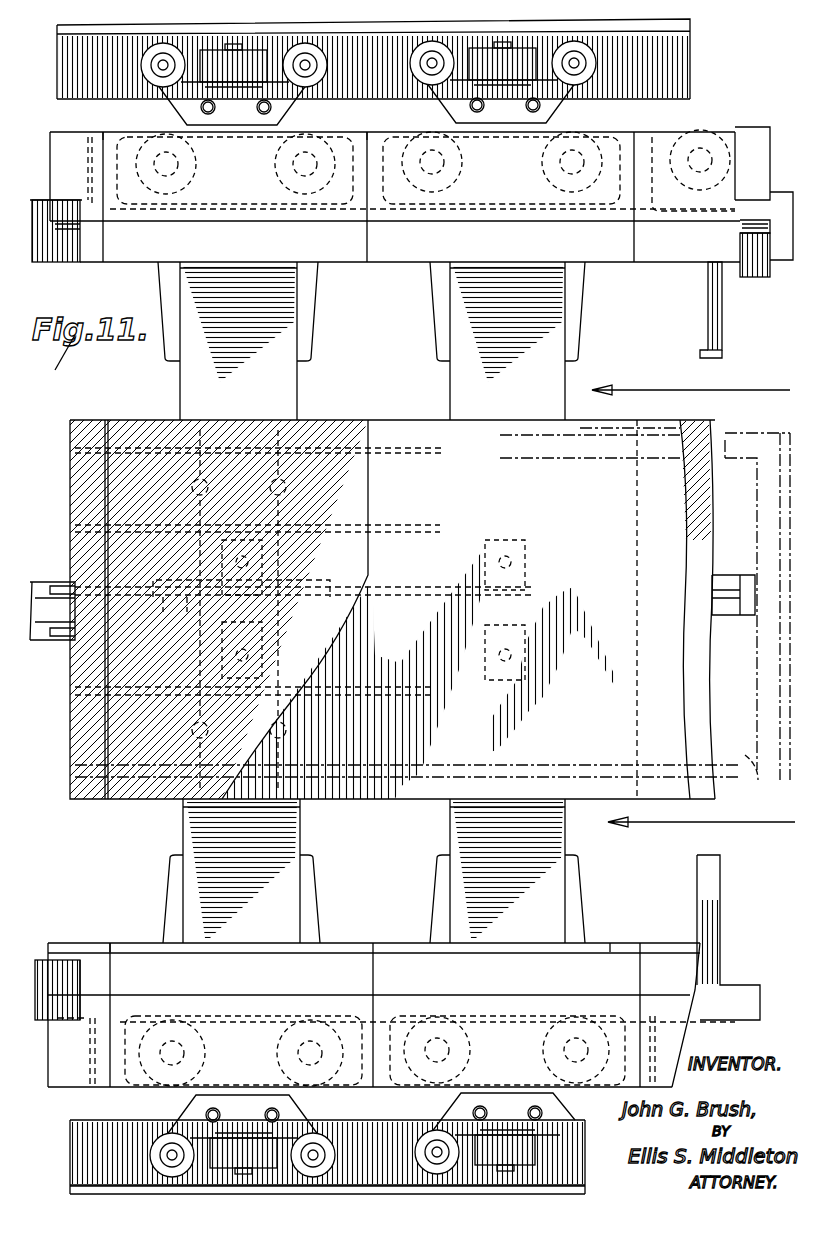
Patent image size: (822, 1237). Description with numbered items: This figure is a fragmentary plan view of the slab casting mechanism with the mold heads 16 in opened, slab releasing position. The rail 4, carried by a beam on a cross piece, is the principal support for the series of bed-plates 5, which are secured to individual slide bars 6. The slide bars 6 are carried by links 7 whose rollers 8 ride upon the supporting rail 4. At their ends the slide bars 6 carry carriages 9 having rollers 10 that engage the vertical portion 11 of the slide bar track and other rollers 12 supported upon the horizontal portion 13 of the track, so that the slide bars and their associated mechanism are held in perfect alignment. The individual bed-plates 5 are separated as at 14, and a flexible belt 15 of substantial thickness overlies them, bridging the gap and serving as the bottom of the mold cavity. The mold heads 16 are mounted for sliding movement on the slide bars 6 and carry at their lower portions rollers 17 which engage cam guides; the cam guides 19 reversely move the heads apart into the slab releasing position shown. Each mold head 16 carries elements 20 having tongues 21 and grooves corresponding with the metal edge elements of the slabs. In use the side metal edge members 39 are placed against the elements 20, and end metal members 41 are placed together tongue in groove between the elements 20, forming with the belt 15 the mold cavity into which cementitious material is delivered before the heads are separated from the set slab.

The rail 4 is at (50, 640).
The bed-plate 5 is at (714, 725).
The slide bar 6 is at (371, 602).
The link 7 is at (280, 596).
The roller 8 is at (275, 638).
The carriage 9 is at (175, 100).
The roller 10 is at (328, 60).
The vertical portion of the slide bar track 11 is at (690, 22).
The roller 12 is at (300, 105).
The horizontal portion of the slide bar track 13 is at (690, 70).
The separation 14 is at (106, 420).
The flexible belt 15 is at (356, 609).
The mold head 16 is at (503, 1005).
The roller 17 is at (213, 152).
The cam guide 19 is at (60, 262).
The element 20 is at (368, 264).
The tongue 21 is at (112, 941).
The side metal edge member 39 is at (780, 433).
The end metal member 41 is at (770, 773).